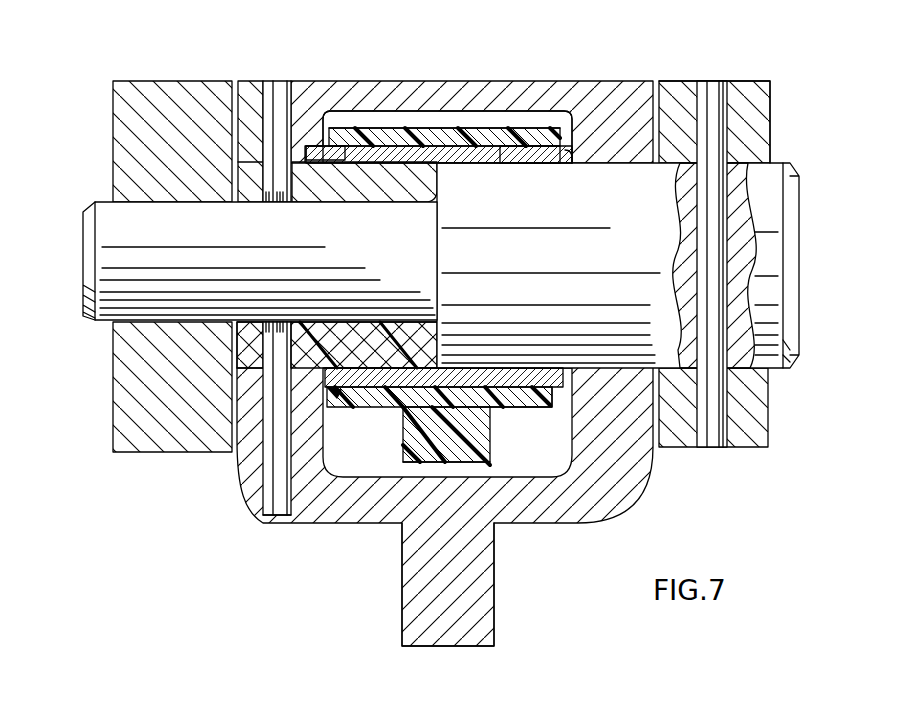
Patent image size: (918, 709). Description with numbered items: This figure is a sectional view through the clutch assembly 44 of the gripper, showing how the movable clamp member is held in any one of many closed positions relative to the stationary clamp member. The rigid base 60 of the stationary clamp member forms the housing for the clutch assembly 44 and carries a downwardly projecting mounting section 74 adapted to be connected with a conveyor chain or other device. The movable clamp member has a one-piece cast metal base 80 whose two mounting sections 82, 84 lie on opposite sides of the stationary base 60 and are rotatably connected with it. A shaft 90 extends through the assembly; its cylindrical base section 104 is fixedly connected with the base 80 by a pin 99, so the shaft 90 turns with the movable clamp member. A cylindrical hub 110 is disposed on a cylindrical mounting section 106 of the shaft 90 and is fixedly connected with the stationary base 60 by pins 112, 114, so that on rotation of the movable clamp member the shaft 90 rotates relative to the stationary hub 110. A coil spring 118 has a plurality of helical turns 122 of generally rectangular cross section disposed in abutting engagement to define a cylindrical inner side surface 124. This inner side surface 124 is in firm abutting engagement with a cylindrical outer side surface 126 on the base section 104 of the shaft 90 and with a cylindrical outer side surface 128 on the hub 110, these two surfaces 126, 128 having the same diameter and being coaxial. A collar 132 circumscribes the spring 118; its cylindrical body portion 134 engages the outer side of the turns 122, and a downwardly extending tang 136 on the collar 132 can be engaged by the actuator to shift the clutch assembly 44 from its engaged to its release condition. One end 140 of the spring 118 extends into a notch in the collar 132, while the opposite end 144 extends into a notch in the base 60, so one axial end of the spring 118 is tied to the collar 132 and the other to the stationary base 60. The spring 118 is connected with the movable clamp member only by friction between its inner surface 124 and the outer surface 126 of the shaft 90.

The clutch assembly 44 is at (445, 128).
The base section 60 is at (630, 487).
The mounting section 74 is at (452, 634).
The base 80 is at (764, 84).
The mounting section 82 is at (180, 110).
The mounting section 84 is at (757, 125).
The shaft 90 is at (798, 252).
The pin 99 is at (705, 437).
The cylindrical base section 104 is at (790, 363).
The cylindrical mounting section 106 is at (90, 318).
The cylindrical hub 110 is at (367, 352).
The pin 112 is at (268, 495).
The pin 114 is at (277, 100).
The coil spring 118 is at (405, 140).
The circular turns 122 is at (540, 163).
The cylindrical inner side surface 124 is at (478, 158).
The cylindrical outer side surface 126 is at (582, 158).
The cylindrical outer side surface 128 is at (318, 172).
The collar 132 is at (495, 450).
The cylindrical body portion 134 is at (351, 138).
The tang 136 is at (425, 443).
The end 140 is at (565, 392).
The end 144 is at (318, 147).